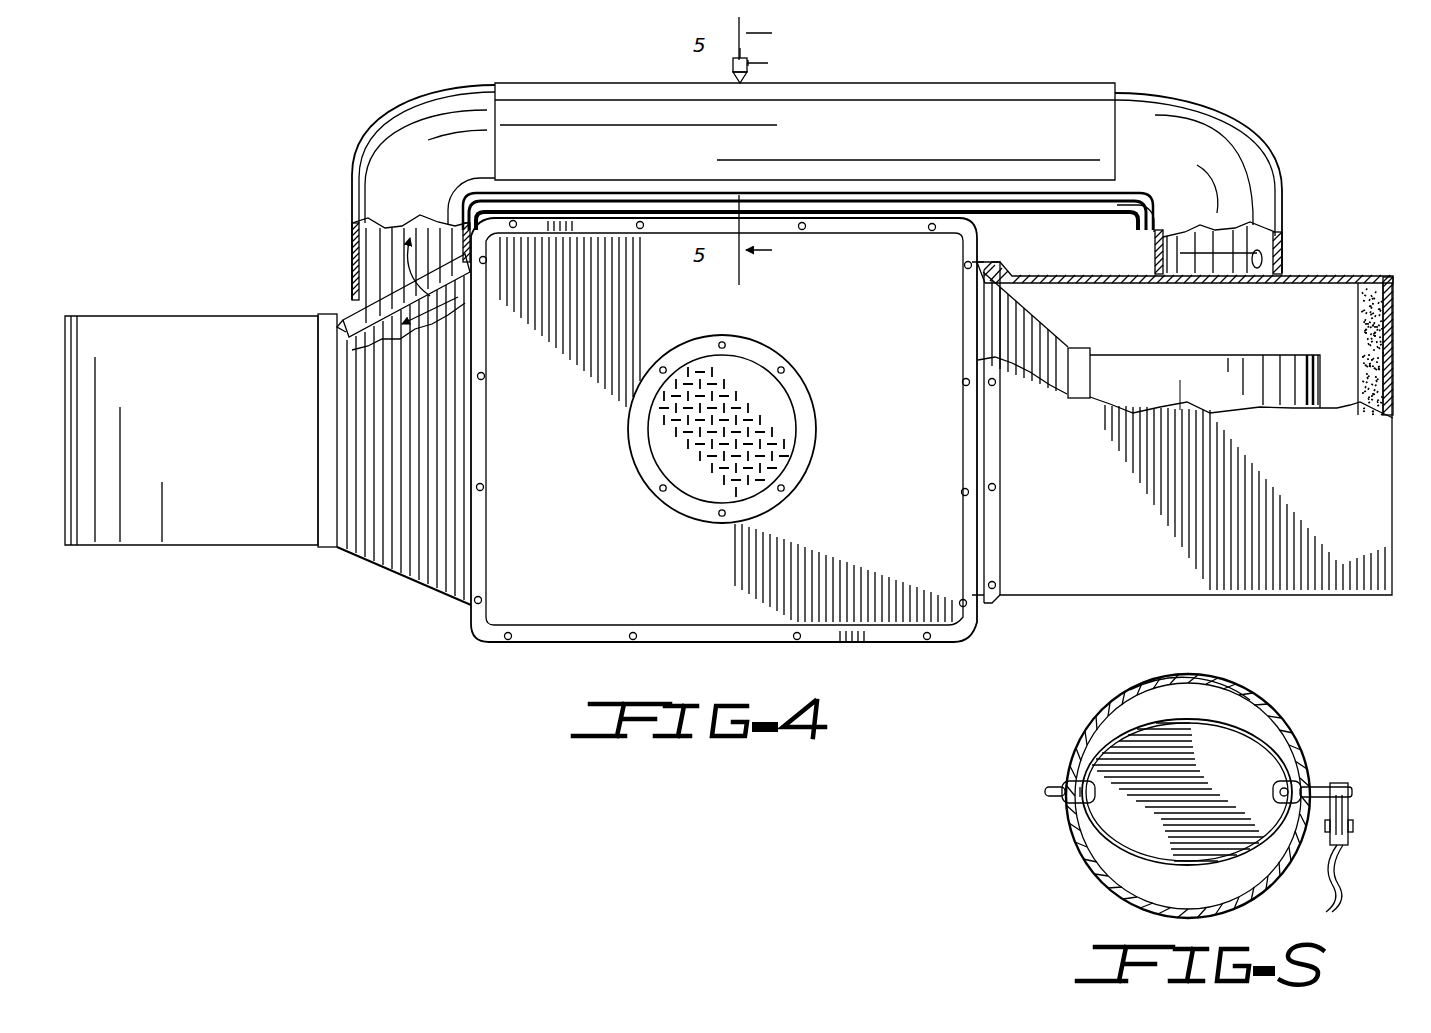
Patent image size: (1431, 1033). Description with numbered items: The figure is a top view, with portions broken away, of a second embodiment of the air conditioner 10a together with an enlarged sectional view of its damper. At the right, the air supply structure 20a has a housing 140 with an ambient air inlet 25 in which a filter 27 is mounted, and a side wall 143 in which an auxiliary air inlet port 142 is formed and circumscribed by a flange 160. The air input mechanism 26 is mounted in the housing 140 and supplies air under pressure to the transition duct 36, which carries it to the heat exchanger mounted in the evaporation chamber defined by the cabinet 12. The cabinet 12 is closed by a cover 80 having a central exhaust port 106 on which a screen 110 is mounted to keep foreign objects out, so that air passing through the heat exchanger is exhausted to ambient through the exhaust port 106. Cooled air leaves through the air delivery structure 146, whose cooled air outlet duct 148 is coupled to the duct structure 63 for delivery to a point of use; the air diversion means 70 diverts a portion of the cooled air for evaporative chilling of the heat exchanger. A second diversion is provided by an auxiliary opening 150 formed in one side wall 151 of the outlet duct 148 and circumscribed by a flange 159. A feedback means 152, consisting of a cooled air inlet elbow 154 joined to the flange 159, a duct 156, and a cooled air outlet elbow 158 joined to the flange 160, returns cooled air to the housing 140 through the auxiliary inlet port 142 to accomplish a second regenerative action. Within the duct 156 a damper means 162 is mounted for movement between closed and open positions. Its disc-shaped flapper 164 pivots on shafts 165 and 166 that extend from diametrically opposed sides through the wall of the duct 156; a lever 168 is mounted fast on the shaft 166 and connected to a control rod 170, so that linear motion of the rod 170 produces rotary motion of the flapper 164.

In FIG. 4, the air conditioner 10a is at (931, 656).
In FIG. 4, the cabinet 12 is at (745, 642).
In FIG. 4, the air supply structure 20a is at (1143, 603).
In FIG. 4, the ambient air inlet 25 is at (1392, 298).
In FIG. 4, the air input mechanism 26 is at (1178, 352).
In FIG. 4, the filter 27 is at (1358, 352).
In FIG. 4, the transition duct 36 is at (1057, 343).
In FIG. 4, the duct structure 63 is at (220, 525).
In FIG. 4, the air diversion means 70 is at (468, 322).
In FIG. 4, the cover 80 is at (708, 608).
In FIG. 4, the exhaust port 106 is at (818, 432).
In FIG. 4, the screen 110 is at (760, 382).
In FIG. 4, the housing 140 is at (1112, 272).
In FIG. 4, the auxiliary air inlet port 142 is at (1196, 272).
In FIG. 4, the side wall 143 is at (1305, 276).
In FIG. 4, the air delivery structure 146 is at (388, 572).
In FIG. 4, the cooled air outlet duct 148 is at (430, 573).
In FIG. 4, the auxiliary opening 150 is at (484, 292).
In FIG. 4, the side wall 151 is at (347, 318).
In FIG. 4, the feedback means 152 is at (1000, 84).
In FIG. 4, the cooled air inlet elbow 154 is at (365, 170).
In FIG. 4, the duct 156 is at (642, 82).
In FIG. 5, the duct 156 is at (1105, 706).
In FIG. 4, the cooled air outlet elbow 158 is at (1268, 153).
In FIG. 4, the flange 159 is at (365, 272).
In FIG. 4, the flange 160 is at (1260, 255).
In FIG. 4, the damper means 162 is at (758, 75).
In FIG. 5, the damper means 162 is at (1250, 708).
In FIG. 5, the flapper 164 is at (1215, 740).
In FIG. 5, the shaft 165 is at (1046, 791).
In FIG. 5, the shaft 166 is at (1355, 811).
In FIG. 5, the lever 168 is at (1340, 783).
In FIG. 5, the control rod 170 is at (1340, 873).